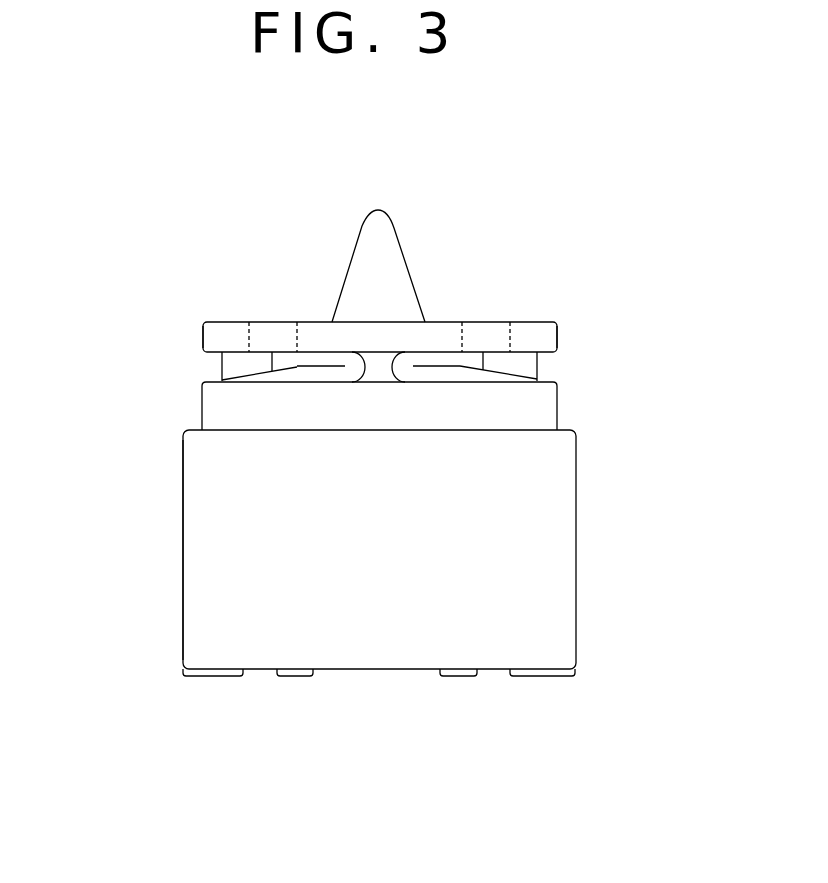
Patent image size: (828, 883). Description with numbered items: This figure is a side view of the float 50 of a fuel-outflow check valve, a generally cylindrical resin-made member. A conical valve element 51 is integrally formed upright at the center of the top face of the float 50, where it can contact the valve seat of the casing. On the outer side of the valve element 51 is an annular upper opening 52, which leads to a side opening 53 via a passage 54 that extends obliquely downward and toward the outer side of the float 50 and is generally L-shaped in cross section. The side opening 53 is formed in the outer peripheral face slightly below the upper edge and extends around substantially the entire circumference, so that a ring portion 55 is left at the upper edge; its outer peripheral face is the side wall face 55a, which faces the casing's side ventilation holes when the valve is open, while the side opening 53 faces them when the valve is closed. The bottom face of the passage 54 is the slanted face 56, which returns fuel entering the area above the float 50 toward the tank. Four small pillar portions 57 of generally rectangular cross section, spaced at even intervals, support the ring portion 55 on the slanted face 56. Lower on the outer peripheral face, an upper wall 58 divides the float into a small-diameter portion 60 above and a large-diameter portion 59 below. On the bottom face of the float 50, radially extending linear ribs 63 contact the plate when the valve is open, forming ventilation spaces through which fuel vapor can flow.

The float 50 is at (563, 298).
The valve element 51 is at (389, 222).
The upper opening 52 is at (297, 322).
The side opening 53 is at (225, 360).
The passage 54 is at (260, 362).
The ring portion 55 is at (220, 325).
The side wall face 55a is at (203, 340).
The slanted face 56 is at (272, 352).
The pillar portions 57 is at (227, 368).
The upper wall 58 is at (562, 430).
The large-diameter portion 59 is at (193, 575).
The small-diameter portion 60 is at (213, 412).
The linear ribs 63 is at (208, 672).